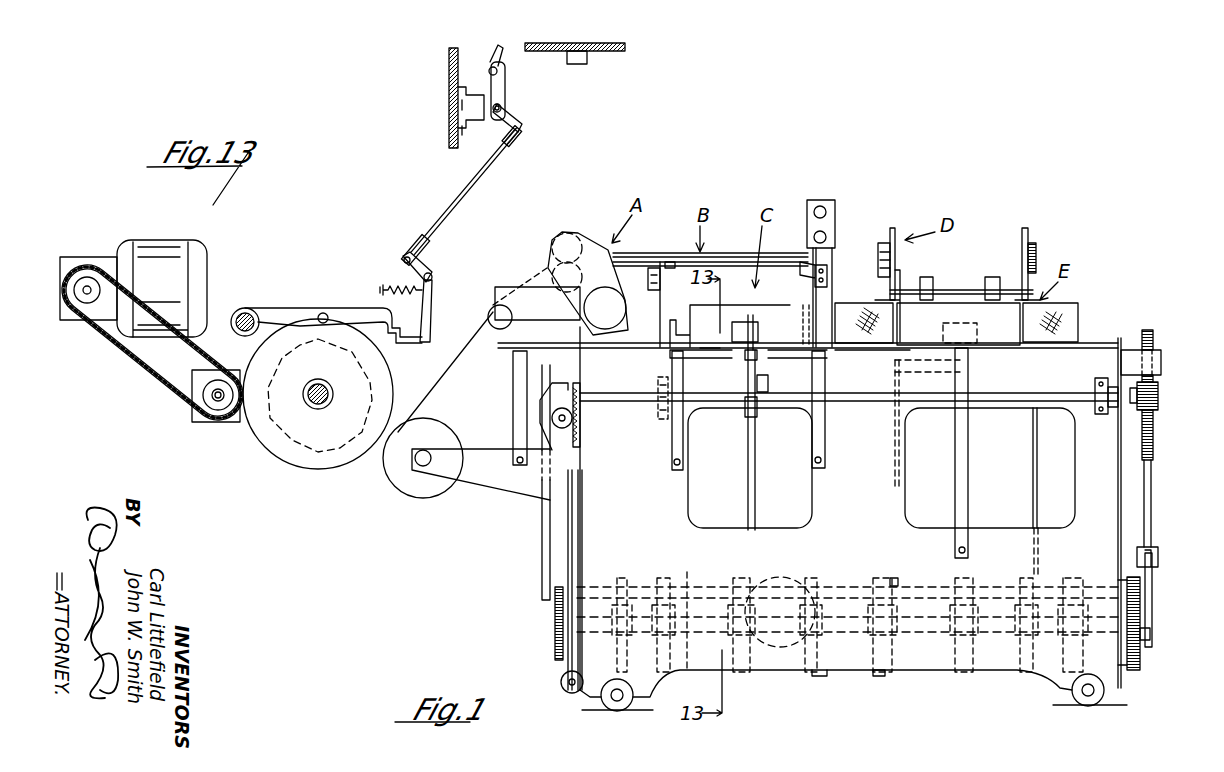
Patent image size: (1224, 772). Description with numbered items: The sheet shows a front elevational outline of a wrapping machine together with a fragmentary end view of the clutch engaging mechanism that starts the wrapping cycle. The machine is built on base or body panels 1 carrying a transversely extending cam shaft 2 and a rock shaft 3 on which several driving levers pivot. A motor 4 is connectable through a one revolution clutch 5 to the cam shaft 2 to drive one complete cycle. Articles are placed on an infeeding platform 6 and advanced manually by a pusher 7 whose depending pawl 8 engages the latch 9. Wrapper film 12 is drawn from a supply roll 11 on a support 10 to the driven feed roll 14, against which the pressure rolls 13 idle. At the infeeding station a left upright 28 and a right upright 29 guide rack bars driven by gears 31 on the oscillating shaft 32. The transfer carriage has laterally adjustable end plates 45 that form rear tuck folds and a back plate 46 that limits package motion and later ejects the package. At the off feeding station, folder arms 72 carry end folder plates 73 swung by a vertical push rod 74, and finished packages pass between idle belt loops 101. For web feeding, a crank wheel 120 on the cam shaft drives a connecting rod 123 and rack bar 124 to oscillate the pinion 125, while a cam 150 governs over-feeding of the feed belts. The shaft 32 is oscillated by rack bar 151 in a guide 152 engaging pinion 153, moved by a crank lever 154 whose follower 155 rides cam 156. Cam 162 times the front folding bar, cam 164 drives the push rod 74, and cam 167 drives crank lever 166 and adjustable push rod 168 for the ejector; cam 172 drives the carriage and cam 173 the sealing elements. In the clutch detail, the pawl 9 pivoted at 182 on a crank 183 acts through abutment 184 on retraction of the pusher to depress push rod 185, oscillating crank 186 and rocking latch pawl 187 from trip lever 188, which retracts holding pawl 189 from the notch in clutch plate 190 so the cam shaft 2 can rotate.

In FIG. 13, the base or body panels 1 is at (449, 92).
In FIG. 1, the base or body panels 1 is at (830, 655).
In FIG. 13, the cam shaft 2 is at (310, 402).
In FIG. 1, the cam shaft 2 is at (718, 650).
In FIG. 13, the rock shaft 3 is at (246, 307).
In FIG. 1, the rock shaft 3 is at (692, 575).
In FIG. 13, the motor 4 is at (192, 247).
In FIG. 1, the motor 4 is at (800, 580).
In FIG. 13, the one revolution clutch 5 is at (296, 440).
In FIG. 1, the one revolution clutch 5 is at (760, 590).
In FIG. 1, the infeeding platform 6 is at (712, 352).
In FIG. 1, the pusher 7 is at (758, 330).
In FIG. 13, the depending pawl 8 is at (578, 64).
In FIG. 1, the depending pawl 8 is at (745, 357).
In FIG. 13, the latch 9 is at (490, 62).
In FIG. 1, the latch 9 is at (757, 362).
In FIG. 13, the support 10 is at (486, 478).
In FIG. 13, the supply roll 11 is at (403, 490).
In FIG. 13, the film 12 is at (440, 368).
In FIG. 1, the pressure rolls 13 is at (560, 235).
In FIG. 1, the feed roll 14 is at (585, 252).
In FIG. 1, the left upright 28 is at (648, 292).
In FIG. 1, the right upright 29 is at (830, 260).
In FIG. 1, the gears 31 is at (652, 420).
In FIG. 1, the shaft 32 is at (992, 400).
In FIG. 1, the end plates 45 is at (812, 313).
In FIG. 1, the back plate 46 is at (970, 310).
In FIG. 1, the folder arms 72 is at (1032, 262).
In FIG. 1, the end folder plates 73 is at (1020, 236).
In FIG. 1, the vertical push rod 74 is at (1036, 486).
In FIG. 1, the belt loops 101 is at (1065, 312).
In FIG. 1, the crank wheel 120 is at (555, 640).
In FIG. 1, the connecting rod 123 is at (542, 545).
In FIG. 1, the rack bar 124 is at (552, 400).
In FIG. 1, the pinion 125 is at (552, 428).
In FIG. 1, the cam 150 is at (665, 578).
In FIG. 1, the rack bar 151 is at (1155, 435).
In FIG. 1, the guide 152 is at (1158, 365).
In FIG. 1, the pinion 153 is at (1160, 395).
In FIG. 1, the crank lever 154 is at (1152, 610).
In FIG. 1, the follower 155 is at (1150, 635).
In FIG. 1, the cam 156 is at (1140, 655).
In FIG. 1, the cam 162 is at (645, 565).
In FIG. 1, the cam 164 is at (1022, 662).
In FIG. 1, the crank lever 166 is at (897, 582).
In FIG. 1, the cam 167 is at (873, 578).
In FIG. 1, the push rod 168 is at (900, 425).
In FIG. 1, the cam 172 is at (1060, 690).
In FIG. 1, the cam 173 is at (962, 640).
In FIG. 13, the pivot 182 is at (490, 71).
In FIG. 13, the crank 183 is at (508, 118).
In FIG. 13, the abutment 184 is at (507, 90).
In FIG. 13, the push rod 185 is at (458, 212).
In FIG. 1, the push rod 185 is at (755, 455).
In FIG. 13, the crank 186 is at (422, 270).
In FIG. 13, the latch pawl 187 is at (430, 308).
In FIG. 13, the trip lever 188 is at (360, 308).
In FIG. 13, the holding pawl 189 is at (320, 312).
In FIG. 13, the clutch plate 190 is at (335, 472).